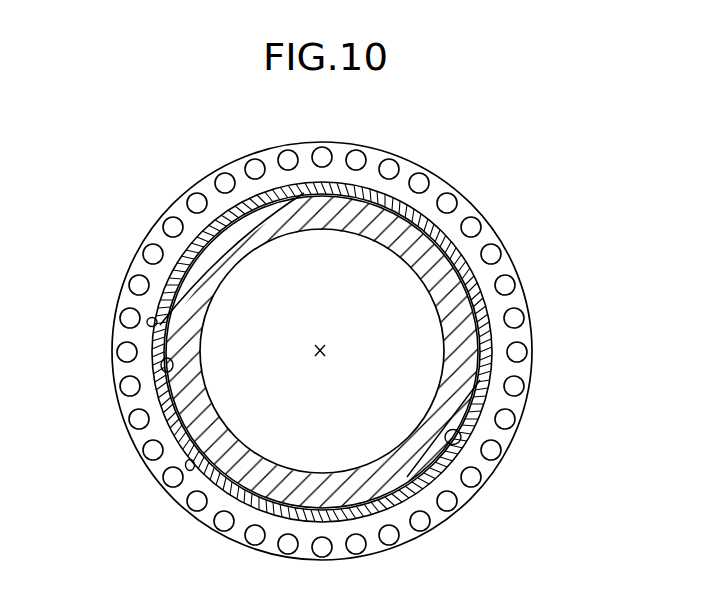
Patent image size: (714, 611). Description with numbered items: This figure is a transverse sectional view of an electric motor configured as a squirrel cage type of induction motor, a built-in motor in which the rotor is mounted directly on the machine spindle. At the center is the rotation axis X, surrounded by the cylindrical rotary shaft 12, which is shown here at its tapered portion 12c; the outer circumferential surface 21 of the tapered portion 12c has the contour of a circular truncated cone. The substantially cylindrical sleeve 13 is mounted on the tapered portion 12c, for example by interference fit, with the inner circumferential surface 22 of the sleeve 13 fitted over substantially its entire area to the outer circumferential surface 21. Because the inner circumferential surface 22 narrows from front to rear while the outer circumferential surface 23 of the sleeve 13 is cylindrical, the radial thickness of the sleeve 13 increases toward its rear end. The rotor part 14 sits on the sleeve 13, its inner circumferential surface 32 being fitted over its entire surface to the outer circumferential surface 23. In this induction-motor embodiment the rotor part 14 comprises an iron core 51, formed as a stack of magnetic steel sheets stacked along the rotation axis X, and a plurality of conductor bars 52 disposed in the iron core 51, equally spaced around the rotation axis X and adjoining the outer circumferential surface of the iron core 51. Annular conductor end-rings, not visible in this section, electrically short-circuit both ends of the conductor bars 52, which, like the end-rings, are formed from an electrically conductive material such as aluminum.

The rotary shaft 12 is at (423, 209).
The tapered portion 12c is at (282, 210).
The sleeve 13 is at (335, 181).
The rotor part 14 is at (472, 199).
The outer circumferential surface of the tapered portion 21 is at (157, 323).
The inner circumferential surface of the sleeve 22 is at (161, 364).
The outer circumferential surface of the sleeve 23 is at (222, 438).
The inner circumferential surface of the rotor core 32 is at (459, 446).
The iron core 51 is at (521, 262).
The conductor bars 52 is at (521, 378).
The rotation axis X is at (331, 348).